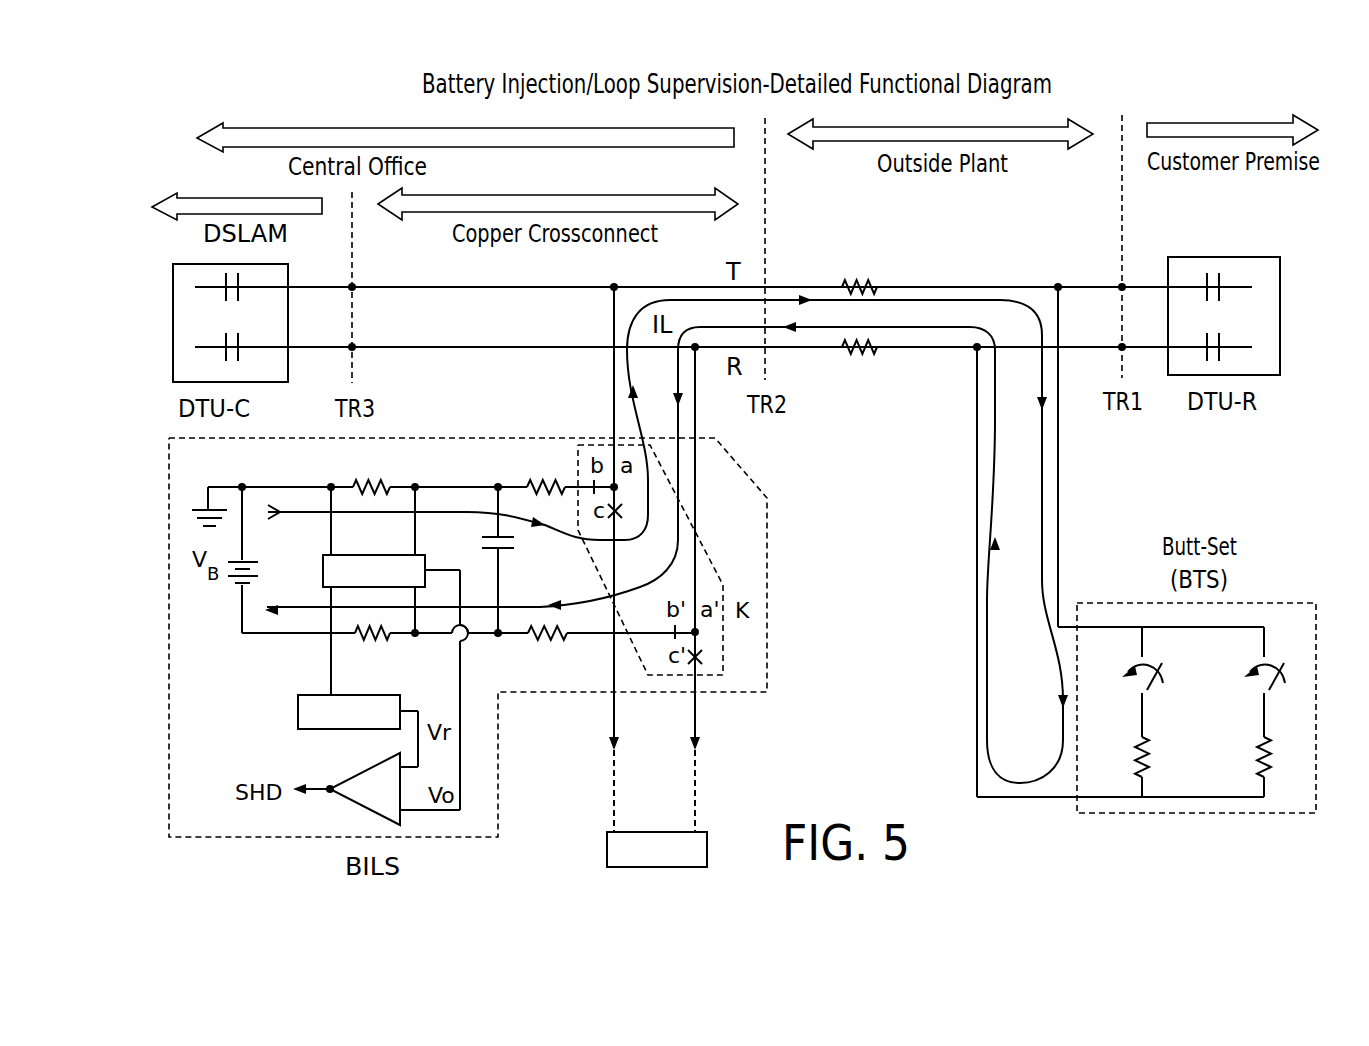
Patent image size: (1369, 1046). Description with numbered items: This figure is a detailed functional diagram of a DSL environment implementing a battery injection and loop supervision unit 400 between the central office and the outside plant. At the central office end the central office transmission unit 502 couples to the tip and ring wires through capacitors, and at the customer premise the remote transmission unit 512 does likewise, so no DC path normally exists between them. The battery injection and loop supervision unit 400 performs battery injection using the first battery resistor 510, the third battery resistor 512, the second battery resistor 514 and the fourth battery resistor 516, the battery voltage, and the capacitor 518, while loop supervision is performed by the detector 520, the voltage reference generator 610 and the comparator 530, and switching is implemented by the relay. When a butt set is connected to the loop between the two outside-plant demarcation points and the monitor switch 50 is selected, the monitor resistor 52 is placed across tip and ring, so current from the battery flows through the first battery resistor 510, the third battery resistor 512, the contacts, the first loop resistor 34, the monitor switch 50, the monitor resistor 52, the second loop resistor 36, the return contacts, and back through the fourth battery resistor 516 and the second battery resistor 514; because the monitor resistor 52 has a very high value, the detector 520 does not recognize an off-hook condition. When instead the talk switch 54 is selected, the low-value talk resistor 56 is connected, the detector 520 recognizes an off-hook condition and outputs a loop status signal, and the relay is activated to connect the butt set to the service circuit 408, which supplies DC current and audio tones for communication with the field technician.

The resistor R_l1 34 is at (877, 286).
The resistor R_l2 36 is at (877, 348).
The switch S_M 50 is at (1148, 692).
The resistor R_m 52 is at (1135, 752).
The switch S_t 54 is at (1270, 692).
The resistor R_t 56 is at (1257, 752).
The BILS 400 is at (540, 692).
The service circuit SC 408 is at (607, 850).
The DTU-C 502 is at (288, 378).
The resistor R_b1 510 is at (390, 488).
The resistor R_b3 512 is at (1199, 255).
The resistor R_b2 514 is at (390, 636).
The resistor R_b4 516 is at (528, 636).
The capacitor C1 518 is at (510, 549).
The detector 520 is at (323, 582).
The comparator VC 530 is at (366, 770).
The voltage reference generator VRG 610 is at (298, 712).